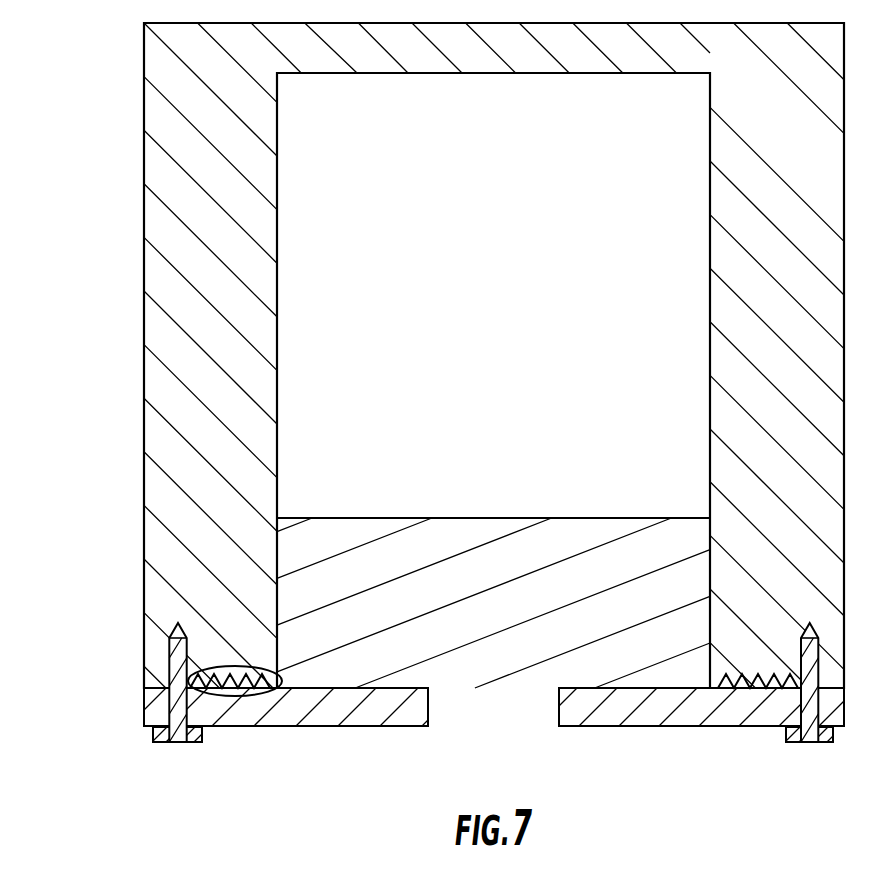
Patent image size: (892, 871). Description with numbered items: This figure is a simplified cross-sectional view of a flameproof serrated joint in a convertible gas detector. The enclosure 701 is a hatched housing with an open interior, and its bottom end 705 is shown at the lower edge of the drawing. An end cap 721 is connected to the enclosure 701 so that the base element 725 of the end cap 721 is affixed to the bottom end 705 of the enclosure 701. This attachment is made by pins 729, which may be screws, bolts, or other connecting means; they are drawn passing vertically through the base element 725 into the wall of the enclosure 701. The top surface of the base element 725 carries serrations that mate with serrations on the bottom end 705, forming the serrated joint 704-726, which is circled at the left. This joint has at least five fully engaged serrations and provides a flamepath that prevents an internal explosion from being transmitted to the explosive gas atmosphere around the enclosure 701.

The enclosure 701 is at (144, 278).
The threaded fastening region 704-726 is at (212, 668).
The bottom end 705 is at (144, 688).
The end cap 721 is at (721, 727).
The base element 725 is at (610, 703).
The pins 729 is at (168, 740).